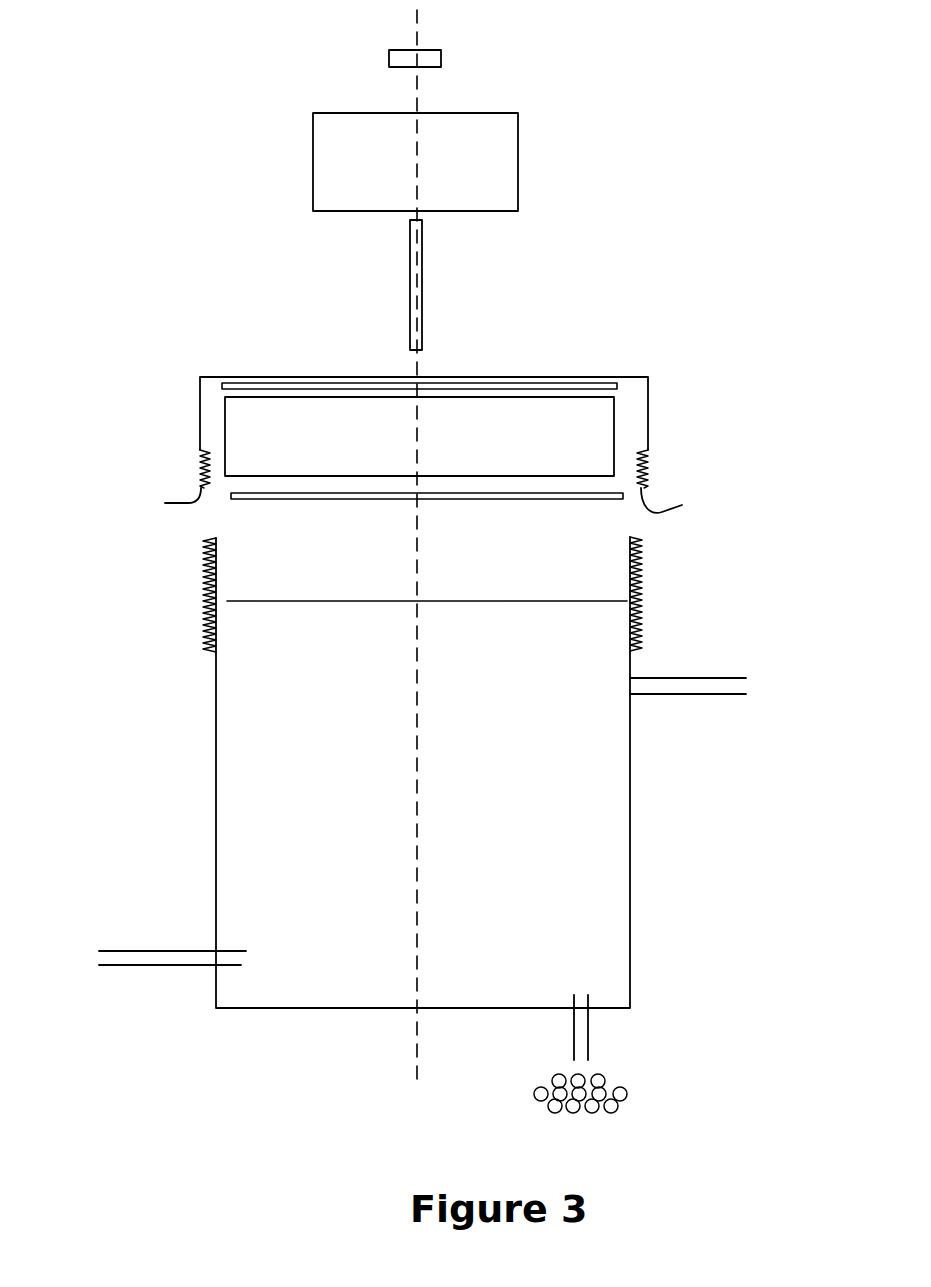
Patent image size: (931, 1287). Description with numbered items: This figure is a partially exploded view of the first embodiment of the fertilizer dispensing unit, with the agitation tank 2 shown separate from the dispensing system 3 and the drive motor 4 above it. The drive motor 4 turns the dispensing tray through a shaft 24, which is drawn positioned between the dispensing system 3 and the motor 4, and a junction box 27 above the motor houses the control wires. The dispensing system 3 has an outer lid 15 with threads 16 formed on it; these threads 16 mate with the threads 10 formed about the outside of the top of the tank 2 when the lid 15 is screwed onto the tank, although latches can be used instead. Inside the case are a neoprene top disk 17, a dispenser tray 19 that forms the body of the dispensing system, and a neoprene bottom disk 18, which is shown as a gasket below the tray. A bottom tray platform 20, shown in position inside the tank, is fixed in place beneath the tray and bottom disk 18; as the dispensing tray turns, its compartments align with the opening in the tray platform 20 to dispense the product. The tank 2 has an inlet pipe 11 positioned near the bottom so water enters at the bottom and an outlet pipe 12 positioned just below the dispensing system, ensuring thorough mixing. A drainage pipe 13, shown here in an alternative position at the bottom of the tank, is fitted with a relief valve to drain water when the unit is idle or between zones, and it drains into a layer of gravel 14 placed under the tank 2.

The agitation tank 2 is at (228, 736).
The dispensing system 3 is at (655, 375).
The drive motor 4 is at (522, 170).
The threads 10 is at (208, 607).
The inlet pipe 11 is at (177, 969).
The outlet pipe 12 is at (699, 687).
The drainage pipe 13 is at (594, 1013).
The layer of gravel 14 is at (624, 1098).
The outer lid 15 is at (258, 376).
The threads 16 is at (424, 501).
The neoprene top disk 17 is at (278, 383).
The neoprene bottom disk 18 is at (503, 503).
The dispenser tray 19 is at (548, 430).
The bottom tray platform 20 is at (456, 609).
The shaft 24 is at (403, 302).
The junction box 27 is at (382, 53).